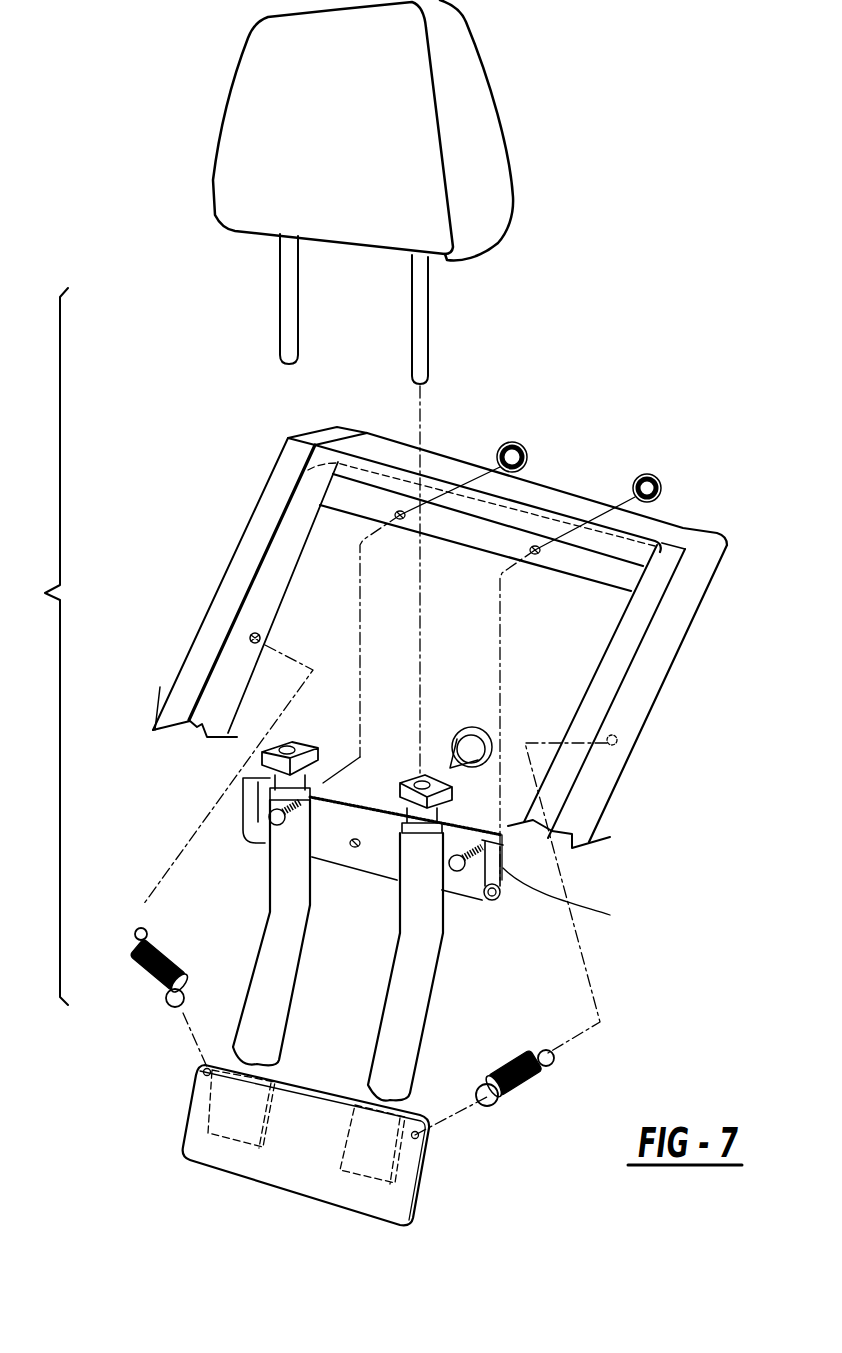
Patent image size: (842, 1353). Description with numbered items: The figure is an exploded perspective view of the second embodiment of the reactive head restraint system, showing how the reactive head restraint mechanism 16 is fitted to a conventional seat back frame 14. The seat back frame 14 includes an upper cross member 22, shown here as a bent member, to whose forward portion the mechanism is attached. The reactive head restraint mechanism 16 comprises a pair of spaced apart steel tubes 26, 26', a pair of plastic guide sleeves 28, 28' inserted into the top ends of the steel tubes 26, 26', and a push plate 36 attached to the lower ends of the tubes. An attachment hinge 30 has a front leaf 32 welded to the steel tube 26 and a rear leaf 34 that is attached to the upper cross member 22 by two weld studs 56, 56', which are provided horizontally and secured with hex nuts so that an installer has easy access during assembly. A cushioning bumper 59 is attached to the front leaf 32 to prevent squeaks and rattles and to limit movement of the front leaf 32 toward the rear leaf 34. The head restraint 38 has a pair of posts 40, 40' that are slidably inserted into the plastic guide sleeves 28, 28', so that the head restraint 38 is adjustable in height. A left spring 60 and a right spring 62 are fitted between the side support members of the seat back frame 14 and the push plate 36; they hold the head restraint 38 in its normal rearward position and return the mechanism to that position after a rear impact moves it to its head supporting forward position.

The seat back frame 14 is at (657, 643).
The reactive head restraint mechanism 16 is at (270, 978).
The upper cross member 22 is at (333, 492).
The steel tube 26 is at (257, 932).
The steel tube 26' is at (441, 967).
The plastic guide sleeve 28 is at (234, 771).
The plastic guide sleeve 28' is at (460, 804).
The attachment hinge 30 is at (465, 890).
The front leaf 32 is at (253, 817).
The rear leaf 34 is at (610, 915).
The push plate 36 is at (292, 1173).
The head restraint 38 is at (473, 93).
The post 40 is at (244, 299).
The post 40' is at (476, 319).
The weld stud 56 is at (414, 632).
The weld stud 56' is at (586, 657).
The cushioning bumper 59 is at (462, 725).
The left spring 60 is at (140, 978).
The right spring 62 is at (530, 1092).